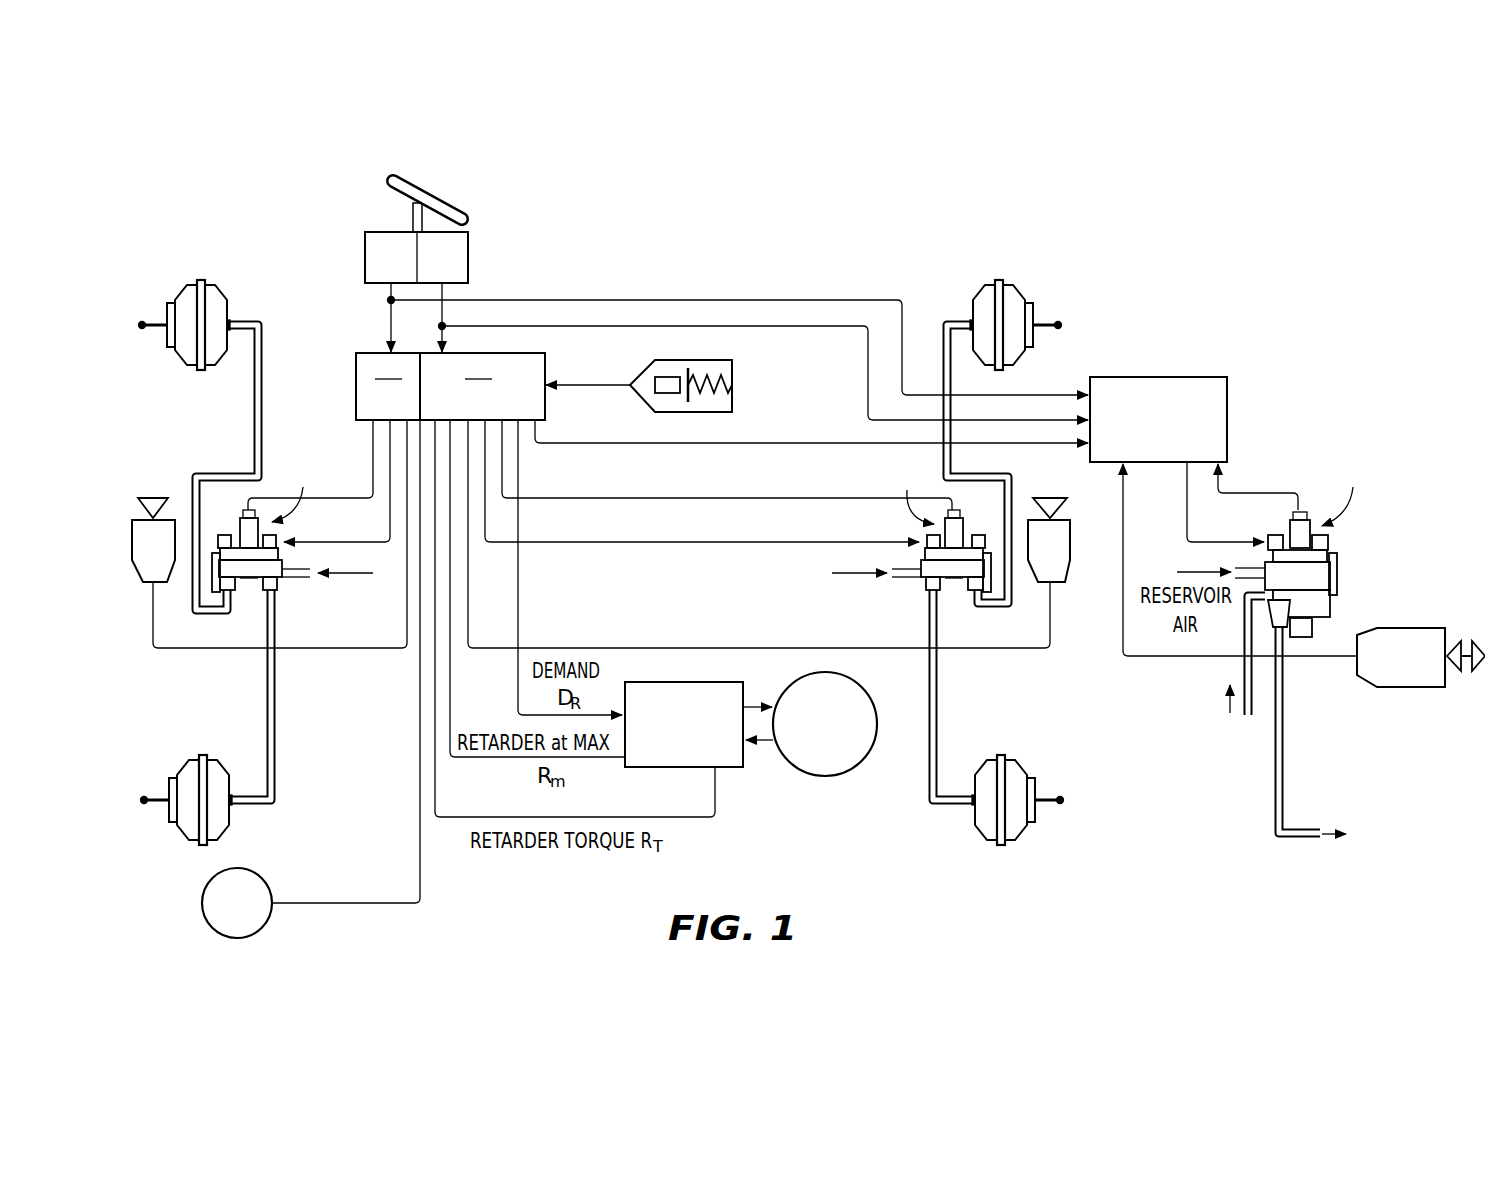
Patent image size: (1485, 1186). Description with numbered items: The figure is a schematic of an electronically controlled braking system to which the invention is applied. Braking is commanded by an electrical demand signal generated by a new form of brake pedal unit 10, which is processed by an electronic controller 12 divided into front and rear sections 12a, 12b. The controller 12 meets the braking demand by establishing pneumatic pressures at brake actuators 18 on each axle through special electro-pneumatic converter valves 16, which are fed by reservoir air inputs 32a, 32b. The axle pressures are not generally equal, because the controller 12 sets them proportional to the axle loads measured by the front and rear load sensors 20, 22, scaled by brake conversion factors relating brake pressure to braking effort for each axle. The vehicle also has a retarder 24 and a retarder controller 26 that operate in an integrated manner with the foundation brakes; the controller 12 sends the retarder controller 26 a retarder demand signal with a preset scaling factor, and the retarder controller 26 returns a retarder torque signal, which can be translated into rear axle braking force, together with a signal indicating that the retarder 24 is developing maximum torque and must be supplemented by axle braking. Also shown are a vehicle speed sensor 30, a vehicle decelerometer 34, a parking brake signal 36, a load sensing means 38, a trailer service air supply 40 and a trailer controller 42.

The brake pedal unit 10 is at (480, 246).
The electronic controller 12 is at (420, 356).
The front section of the electronic controller 12a is at (388, 386).
The rear section of the electronic controller 12b is at (482, 386).
The electro-pneumatic converter valve 16 is at (251, 590).
The brake actuator 18 is at (222, 300).
The front load sensor 20 is at (143, 582).
The rear load sensor 22 is at (1060, 570).
The retarder 24 is at (850, 760).
The retarder controller 26 is at (732, 768).
The vehicle speed sensor 30 is at (259, 880).
The reservoir air input 32a is at (333, 605).
The reservoir air input 32b is at (866, 605).
The vehicle decelerometer 34 is at (732, 403).
The parking brake signal 36 is at (1228, 707).
The load sensing means 38 is at (1363, 678).
The trailer service air supply 40 is at (1295, 830).
The trailer controller 42 is at (1205, 377).